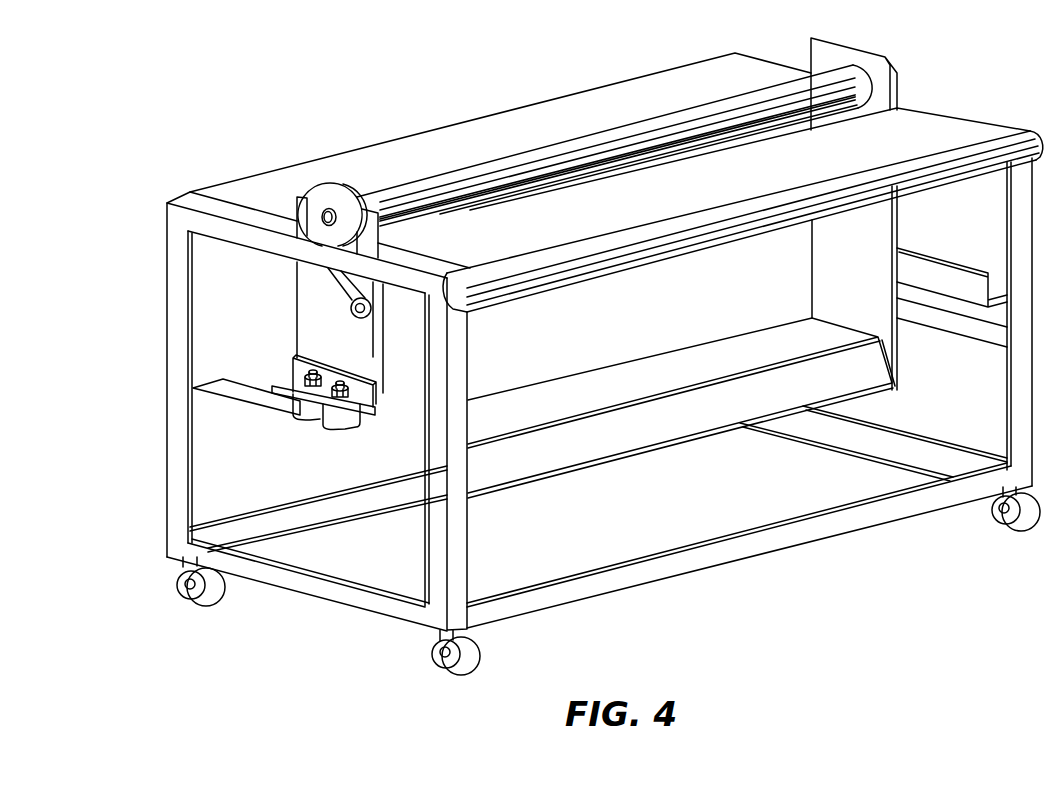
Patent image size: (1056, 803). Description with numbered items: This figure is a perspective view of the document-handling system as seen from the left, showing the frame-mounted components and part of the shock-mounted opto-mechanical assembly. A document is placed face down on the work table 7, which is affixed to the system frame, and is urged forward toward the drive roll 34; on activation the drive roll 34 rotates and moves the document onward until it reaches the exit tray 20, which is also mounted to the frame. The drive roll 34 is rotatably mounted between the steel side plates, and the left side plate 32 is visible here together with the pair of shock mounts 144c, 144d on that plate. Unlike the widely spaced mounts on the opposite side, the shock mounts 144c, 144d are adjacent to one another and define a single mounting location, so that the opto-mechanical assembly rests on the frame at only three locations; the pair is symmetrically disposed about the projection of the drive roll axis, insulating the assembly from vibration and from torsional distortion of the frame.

The work table 7 is at (933, 135).
The exit tray 20 is at (637, 82).
The drive roll 34 is at (747, 120).
The left side plate 32 is at (307, 306).
The shock mount 144c is at (190, 387).
The shock mount 144d is at (343, 417).